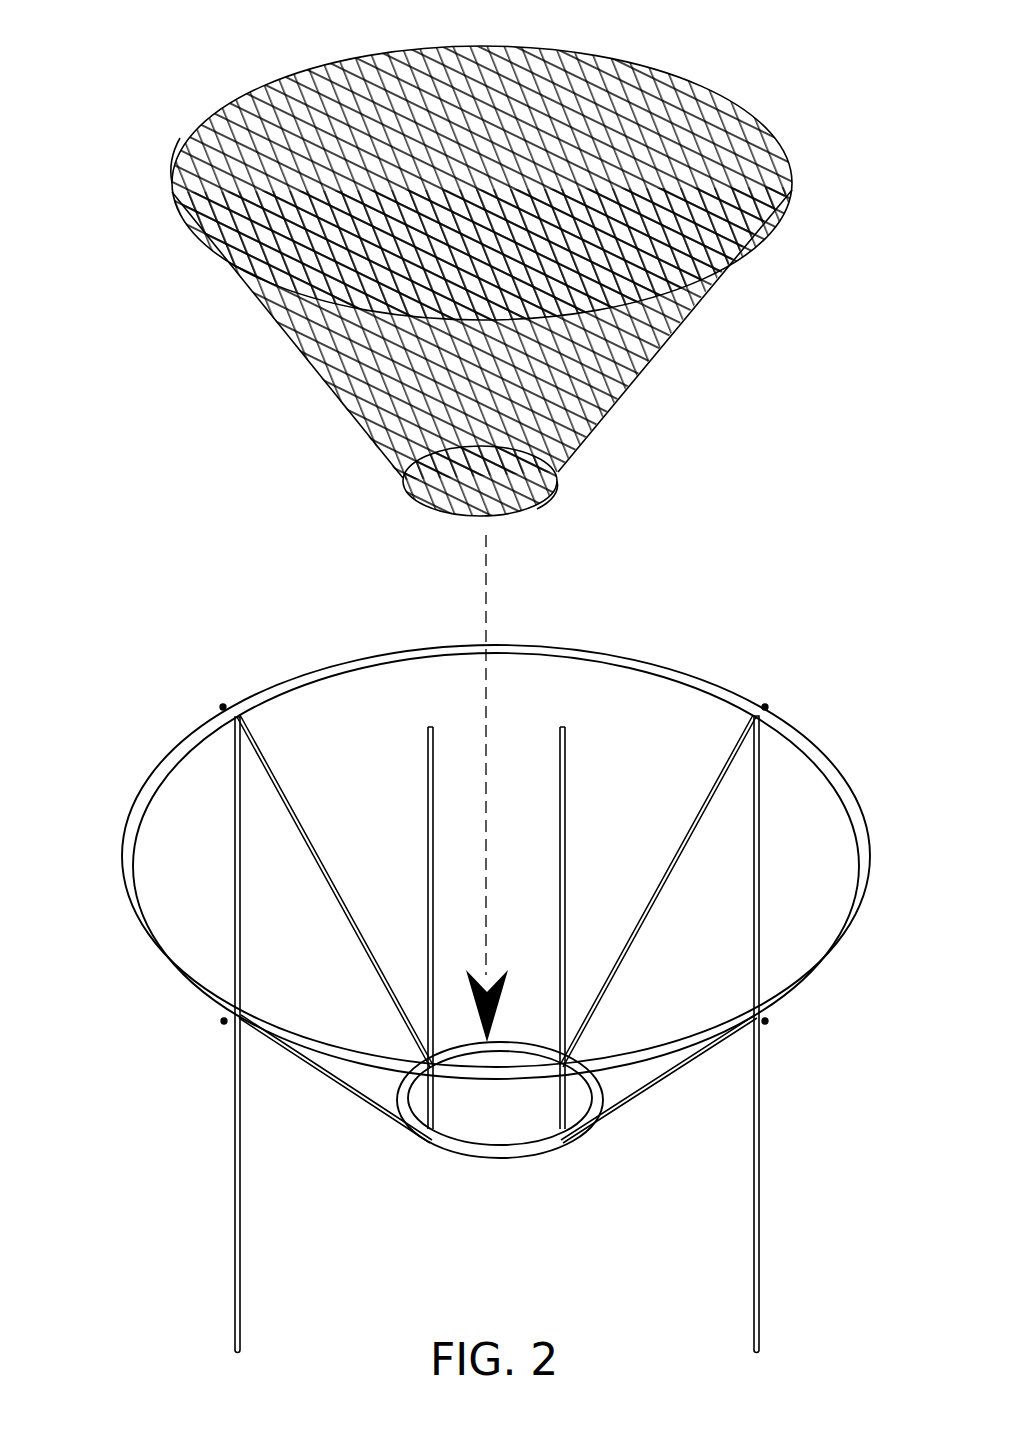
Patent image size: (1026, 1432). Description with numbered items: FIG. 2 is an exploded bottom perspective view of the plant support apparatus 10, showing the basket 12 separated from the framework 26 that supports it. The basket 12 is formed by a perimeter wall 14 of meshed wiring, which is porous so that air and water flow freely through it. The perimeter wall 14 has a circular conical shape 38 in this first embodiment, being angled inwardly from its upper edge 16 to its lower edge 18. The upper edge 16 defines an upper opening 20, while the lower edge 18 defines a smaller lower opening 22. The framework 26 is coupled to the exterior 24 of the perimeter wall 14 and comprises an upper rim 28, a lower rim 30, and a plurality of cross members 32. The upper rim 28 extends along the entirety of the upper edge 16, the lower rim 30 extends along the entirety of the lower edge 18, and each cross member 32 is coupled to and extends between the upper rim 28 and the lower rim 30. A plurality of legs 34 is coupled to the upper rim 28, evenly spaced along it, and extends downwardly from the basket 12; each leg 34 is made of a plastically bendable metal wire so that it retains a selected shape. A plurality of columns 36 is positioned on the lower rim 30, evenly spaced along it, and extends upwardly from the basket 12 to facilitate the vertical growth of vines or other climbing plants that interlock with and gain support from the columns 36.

The plant support apparatus 10 is at (130, 152).
The basket 12 is at (204, 330).
The perimeter wall 14 is at (665, 357).
The upper edge 16 is at (750, 112).
The lower edge 18 is at (557, 492).
The upper opening 20 is at (620, 48).
The lower opening 22 is at (456, 500).
The exterior 24 is at (313, 366).
The framework 26 is at (105, 742).
The upper rim 28 is at (823, 768).
The lower rim 30 is at (525, 1152).
The cross members 32 is at (293, 815).
The legs 34 is at (237, 918).
The columns 36 is at (567, 760).
The circular conical shape 38 is at (168, 216).